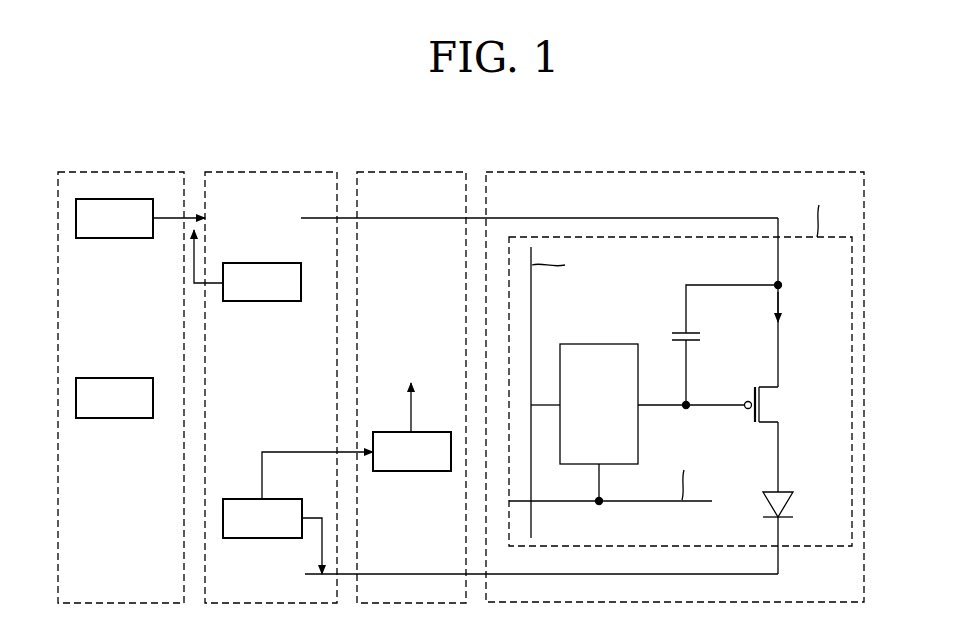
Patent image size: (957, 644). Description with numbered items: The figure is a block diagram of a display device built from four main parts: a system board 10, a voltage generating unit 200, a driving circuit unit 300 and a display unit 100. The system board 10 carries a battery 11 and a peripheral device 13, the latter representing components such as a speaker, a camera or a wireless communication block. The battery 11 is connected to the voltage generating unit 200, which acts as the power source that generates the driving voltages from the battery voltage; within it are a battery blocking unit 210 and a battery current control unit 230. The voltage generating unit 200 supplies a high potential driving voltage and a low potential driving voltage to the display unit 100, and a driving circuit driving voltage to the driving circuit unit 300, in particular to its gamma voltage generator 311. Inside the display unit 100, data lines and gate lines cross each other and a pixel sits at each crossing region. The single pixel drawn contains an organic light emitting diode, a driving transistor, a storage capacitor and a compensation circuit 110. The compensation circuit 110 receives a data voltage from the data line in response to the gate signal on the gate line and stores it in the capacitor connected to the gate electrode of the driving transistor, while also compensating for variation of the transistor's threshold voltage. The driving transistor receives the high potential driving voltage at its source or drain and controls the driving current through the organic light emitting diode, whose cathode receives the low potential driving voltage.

The system board 10 is at (122, 172).
The battery 11 is at (114, 240).
The peripheral device 13 is at (115, 419).
The display unit 100 is at (674, 172).
The compensation circuit 110 is at (608, 344).
The voltage generating unit 200 is at (270, 172).
The battery blocking unit 210 is at (262, 302).
The battery current control unit 230 is at (262, 539).
The driving circuit unit 300 is at (411, 172).
The gamma voltage generator 311 is at (411, 472).